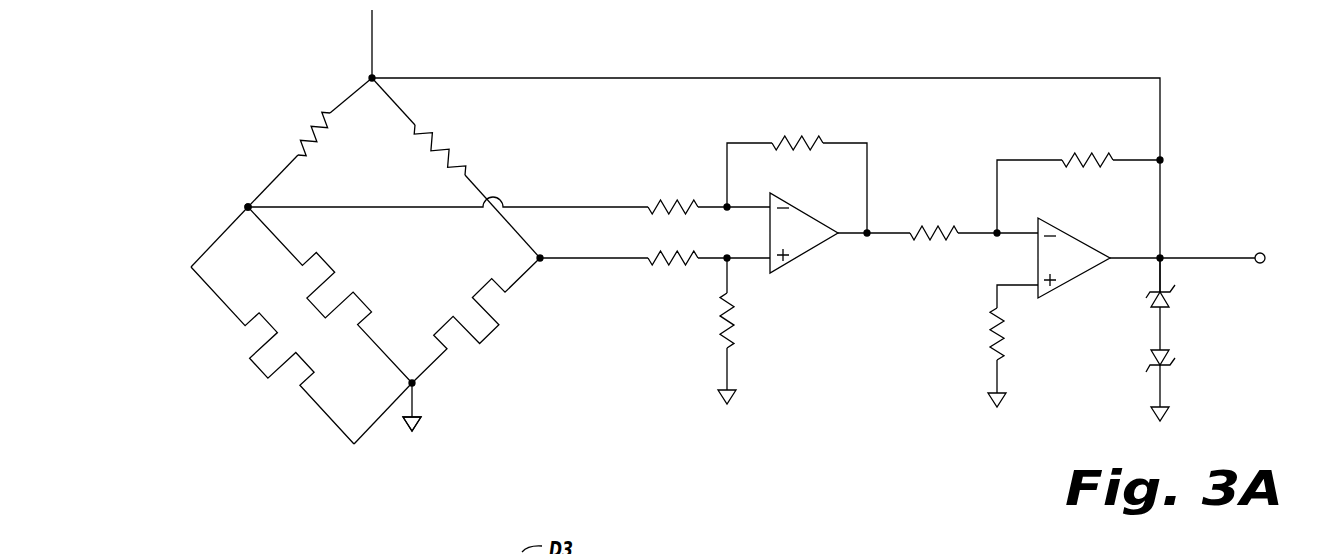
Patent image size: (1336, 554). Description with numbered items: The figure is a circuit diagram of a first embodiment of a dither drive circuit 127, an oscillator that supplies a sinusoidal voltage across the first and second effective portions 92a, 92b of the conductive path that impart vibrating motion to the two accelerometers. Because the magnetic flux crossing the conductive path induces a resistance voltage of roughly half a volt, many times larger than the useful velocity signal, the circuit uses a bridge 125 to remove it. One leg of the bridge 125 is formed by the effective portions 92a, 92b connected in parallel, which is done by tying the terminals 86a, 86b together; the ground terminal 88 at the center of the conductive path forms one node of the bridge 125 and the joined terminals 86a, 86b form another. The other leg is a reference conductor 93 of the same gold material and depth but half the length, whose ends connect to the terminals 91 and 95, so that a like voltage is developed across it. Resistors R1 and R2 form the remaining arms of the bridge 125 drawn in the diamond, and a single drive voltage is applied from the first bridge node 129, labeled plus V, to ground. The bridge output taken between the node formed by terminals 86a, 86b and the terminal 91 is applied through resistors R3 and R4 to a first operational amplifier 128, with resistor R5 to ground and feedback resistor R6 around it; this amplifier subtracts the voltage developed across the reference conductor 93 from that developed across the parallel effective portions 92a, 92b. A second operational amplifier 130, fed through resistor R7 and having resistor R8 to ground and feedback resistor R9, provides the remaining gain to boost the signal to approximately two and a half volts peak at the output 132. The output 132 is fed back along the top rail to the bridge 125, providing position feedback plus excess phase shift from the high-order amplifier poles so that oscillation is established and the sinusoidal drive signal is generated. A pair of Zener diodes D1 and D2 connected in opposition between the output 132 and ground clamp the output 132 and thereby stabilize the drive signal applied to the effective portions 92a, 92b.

The dither drive circuit 127 is at (357, 254).
The first bridge node 129 is at (372, 78).
The bridge 125 is at (394, 168).
The terminal 86a is at (248, 207).
The terminal 86b is at (213, 204).
The terminal 91 is at (540, 258).
The first effective portion 92a is at (322, 262).
The second effective portion 92b is at (273, 357).
The reference conductor 93 is at (452, 322).
The ground terminal 88 is at (431, 405).
The terminal 95 is at (428, 431).
The first operational amplifier 128 is at (805, 242).
The second operational amplifier 130 is at (1063, 277).
The output 132 is at (1260, 253).
The resistor R1 is at (310, 142).
The resistor R2 is at (355, 179).
The resistor R3 is at (709, 194).
The resistor R4 is at (709, 276).
The resistor R5 is at (742, 329).
The resistor R6 is at (795, 171).
The resistor R7 is at (974, 221).
The resistor R8 is at (1013, 346).
The resistor R9 is at (1078, 183).
The Zener diode D1 is at (1148, 304).
The Zener diode D2 is at (1148, 382).